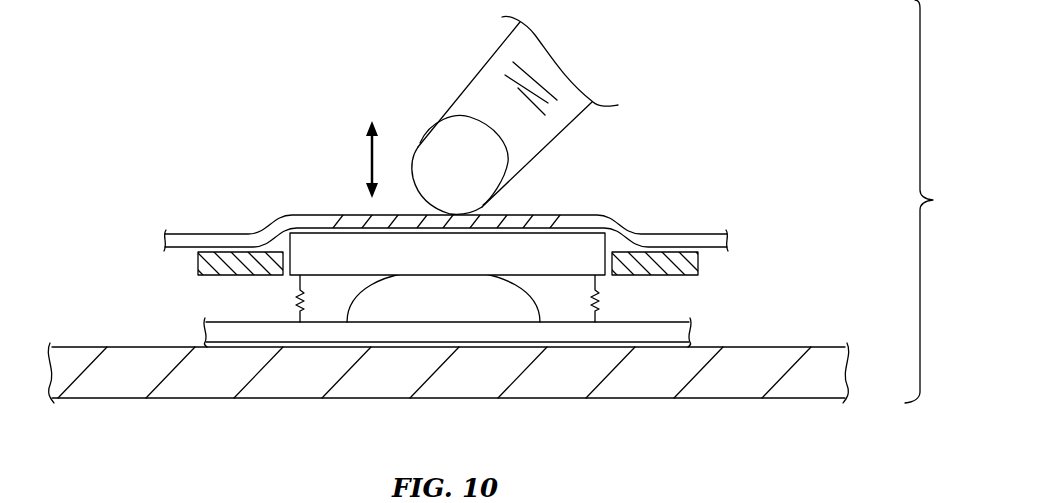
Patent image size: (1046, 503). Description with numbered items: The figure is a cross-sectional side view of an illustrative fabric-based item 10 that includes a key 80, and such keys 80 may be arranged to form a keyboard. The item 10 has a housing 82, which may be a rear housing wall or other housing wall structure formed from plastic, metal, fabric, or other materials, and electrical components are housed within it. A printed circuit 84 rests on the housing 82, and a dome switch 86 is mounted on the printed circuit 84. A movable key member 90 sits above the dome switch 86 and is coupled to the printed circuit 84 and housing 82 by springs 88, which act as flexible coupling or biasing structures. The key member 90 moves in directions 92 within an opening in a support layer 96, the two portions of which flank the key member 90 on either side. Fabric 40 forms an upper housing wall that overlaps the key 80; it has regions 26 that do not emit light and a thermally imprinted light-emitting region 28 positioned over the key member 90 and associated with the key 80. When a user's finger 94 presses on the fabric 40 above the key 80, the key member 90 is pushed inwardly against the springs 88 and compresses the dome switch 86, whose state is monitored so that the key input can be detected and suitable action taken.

The fabric-based item 10 is at (931, 201).
The regions that do not emit light 26 is at (212, 234).
The thermally imprinted light-emitting regions 28 is at (540, 220).
The fabric 40 is at (692, 222).
The key 80 is at (758, 122).
The housing 82 is at (790, 358).
The printed circuit 84 is at (667, 321).
The dome switch 86 is at (347, 302).
The spring 88 is at (287, 304).
The key member 90 is at (575, 243).
The directions 92 is at (370, 160).
The user's finger 94 is at (479, 72).
The support layer 96 is at (197, 277).